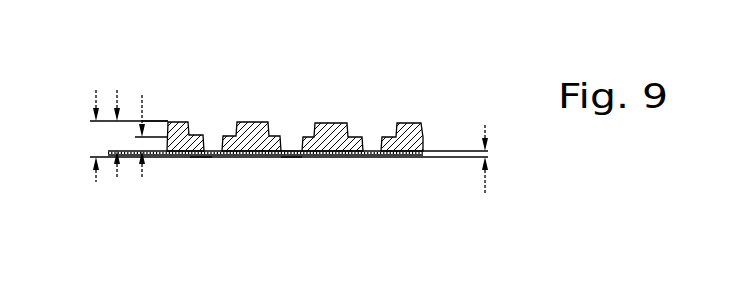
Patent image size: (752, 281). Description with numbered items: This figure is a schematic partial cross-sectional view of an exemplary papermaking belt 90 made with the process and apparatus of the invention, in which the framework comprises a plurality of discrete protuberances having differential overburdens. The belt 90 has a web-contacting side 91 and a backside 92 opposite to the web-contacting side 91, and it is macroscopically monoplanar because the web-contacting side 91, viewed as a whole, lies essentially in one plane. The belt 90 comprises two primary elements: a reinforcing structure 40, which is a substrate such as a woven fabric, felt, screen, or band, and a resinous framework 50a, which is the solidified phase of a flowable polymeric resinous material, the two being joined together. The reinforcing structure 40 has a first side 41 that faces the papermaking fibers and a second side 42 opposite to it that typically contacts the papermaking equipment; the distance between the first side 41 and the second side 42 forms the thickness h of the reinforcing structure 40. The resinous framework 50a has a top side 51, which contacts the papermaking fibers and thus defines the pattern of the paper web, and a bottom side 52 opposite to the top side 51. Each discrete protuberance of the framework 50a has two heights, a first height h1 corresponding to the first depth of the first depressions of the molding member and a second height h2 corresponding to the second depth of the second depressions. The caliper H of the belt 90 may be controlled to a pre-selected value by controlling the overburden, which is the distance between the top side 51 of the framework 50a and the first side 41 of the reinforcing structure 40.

The reinforcing structure 40 is at (218, 162).
The first side 41 is at (292, 120).
The second side 42 is at (293, 160).
The resinous framework 50a is at (250, 122).
The top side 51 is at (405, 122).
The bottom side 52 is at (335, 158).
The papermaking belt 90 is at (432, 76).
The web-contacting side 91 is at (182, 92).
The backside 92 is at (201, 175).
The caliper H is at (96, 140).
The thickness of the reinforcing structure h is at (483, 183).
The first height h1 is at (143, 177).
The second height h2 is at (117, 95).